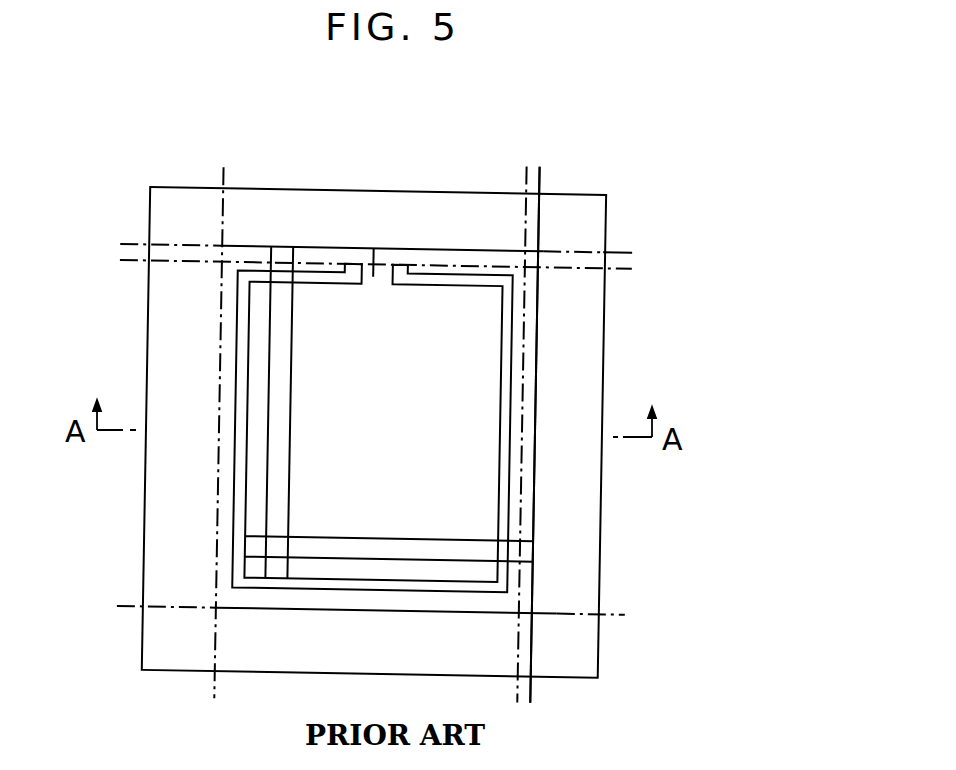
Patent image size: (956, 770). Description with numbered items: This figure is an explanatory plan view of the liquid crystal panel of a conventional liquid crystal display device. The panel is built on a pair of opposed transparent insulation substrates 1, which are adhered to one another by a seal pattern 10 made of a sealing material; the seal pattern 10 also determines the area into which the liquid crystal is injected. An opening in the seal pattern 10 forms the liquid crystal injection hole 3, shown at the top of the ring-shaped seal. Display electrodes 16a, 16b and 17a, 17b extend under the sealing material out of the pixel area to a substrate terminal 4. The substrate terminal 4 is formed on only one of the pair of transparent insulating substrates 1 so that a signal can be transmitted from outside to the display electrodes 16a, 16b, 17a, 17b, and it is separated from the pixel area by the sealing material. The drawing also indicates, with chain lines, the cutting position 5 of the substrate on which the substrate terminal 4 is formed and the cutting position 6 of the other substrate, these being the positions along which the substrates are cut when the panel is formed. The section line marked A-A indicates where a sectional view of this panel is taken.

The pair of opposed transparent insulation substrates 1 is at (180, 543).
The liquid crystal injection hole 3 is at (372, 248).
The substrate terminal 4 is at (495, 262).
The cutting position 5 is at (222, 168).
The cutting position 6 is at (526, 168).
The seal pattern 10 is at (505, 395).
The display electrode 16a is at (270, 248).
The display electrode 16b is at (292, 248).
The display electrode 17a is at (480, 558).
The display electrode 17b is at (480, 537).